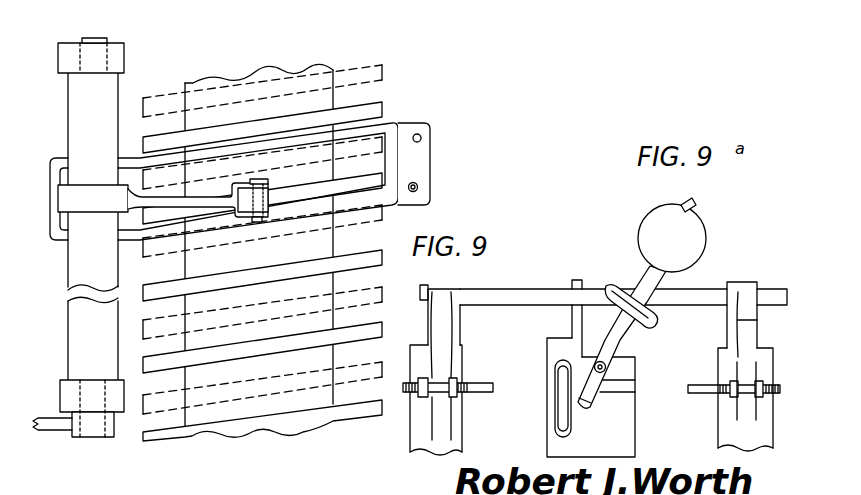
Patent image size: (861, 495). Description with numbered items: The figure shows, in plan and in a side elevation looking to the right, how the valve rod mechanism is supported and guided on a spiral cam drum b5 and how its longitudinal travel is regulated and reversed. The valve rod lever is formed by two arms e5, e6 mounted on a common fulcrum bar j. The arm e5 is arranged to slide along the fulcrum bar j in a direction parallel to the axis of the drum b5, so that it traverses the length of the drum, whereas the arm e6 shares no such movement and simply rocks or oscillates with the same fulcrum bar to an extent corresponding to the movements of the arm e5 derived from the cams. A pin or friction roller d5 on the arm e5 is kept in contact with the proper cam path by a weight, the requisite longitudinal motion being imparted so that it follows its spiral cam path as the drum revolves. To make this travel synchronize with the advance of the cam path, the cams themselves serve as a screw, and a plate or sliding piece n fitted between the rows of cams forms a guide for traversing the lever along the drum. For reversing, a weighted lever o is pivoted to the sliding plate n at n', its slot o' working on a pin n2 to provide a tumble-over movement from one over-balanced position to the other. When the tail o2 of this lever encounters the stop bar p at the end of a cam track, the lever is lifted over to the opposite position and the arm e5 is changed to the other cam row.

In FIG. 9, the fulcrum bar j is at (77, 337).
In FIG. 9, the lever arm e6 is at (78, 436).
In FIG. 9, the lever arm e5 is at (195, 198).
In FIG. 9, the pin or friction roller d5 is at (270, 198).
In FIG. 9, the drum b5 is at (276, 293).
In FIG. 9, the sliding plate n is at (253, 181).
In FIG. 9a, the sliding plate n is at (604, 397).
In FIG. 9a, the pivot n' is at (630, 377).
In FIG. 9a, the pin n2 is at (612, 290).
In FIG. 9a, the weighted lever o is at (657, 237).
In FIG. 9a, the slot o' is at (630, 337).
In FIG. 9a, the tail o2 is at (587, 397).
In FIG. 9a, the stop bar p is at (487, 390).